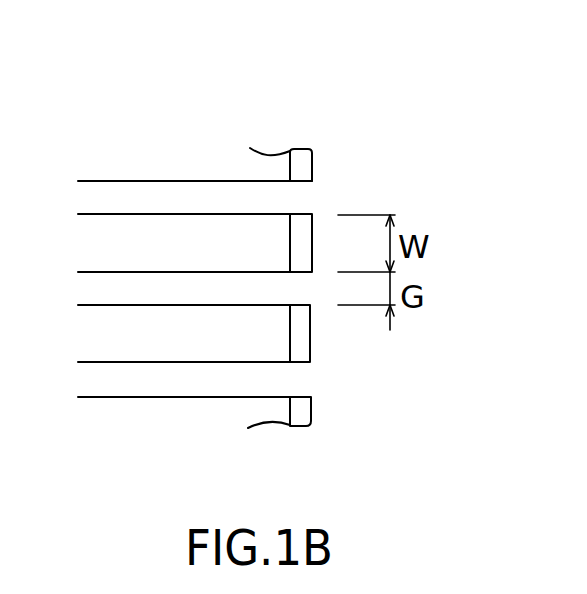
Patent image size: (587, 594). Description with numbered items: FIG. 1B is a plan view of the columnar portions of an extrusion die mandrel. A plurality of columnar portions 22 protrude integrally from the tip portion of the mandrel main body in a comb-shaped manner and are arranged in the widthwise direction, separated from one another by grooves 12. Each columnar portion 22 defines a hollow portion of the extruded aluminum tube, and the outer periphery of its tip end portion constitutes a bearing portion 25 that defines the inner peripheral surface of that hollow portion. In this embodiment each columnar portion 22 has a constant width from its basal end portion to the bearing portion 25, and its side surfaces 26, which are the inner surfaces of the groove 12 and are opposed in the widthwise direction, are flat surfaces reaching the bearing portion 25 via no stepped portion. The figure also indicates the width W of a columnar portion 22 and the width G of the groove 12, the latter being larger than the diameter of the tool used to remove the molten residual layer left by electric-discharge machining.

The groove 12 is at (285, 198).
The columnar portion 22 is at (108, 227).
The bearing portion 25 is at (297, 272).
The side surface 26 is at (183, 271).